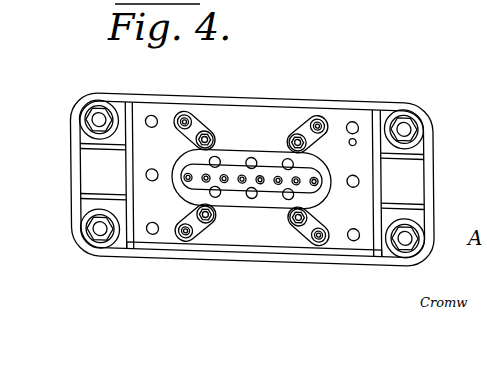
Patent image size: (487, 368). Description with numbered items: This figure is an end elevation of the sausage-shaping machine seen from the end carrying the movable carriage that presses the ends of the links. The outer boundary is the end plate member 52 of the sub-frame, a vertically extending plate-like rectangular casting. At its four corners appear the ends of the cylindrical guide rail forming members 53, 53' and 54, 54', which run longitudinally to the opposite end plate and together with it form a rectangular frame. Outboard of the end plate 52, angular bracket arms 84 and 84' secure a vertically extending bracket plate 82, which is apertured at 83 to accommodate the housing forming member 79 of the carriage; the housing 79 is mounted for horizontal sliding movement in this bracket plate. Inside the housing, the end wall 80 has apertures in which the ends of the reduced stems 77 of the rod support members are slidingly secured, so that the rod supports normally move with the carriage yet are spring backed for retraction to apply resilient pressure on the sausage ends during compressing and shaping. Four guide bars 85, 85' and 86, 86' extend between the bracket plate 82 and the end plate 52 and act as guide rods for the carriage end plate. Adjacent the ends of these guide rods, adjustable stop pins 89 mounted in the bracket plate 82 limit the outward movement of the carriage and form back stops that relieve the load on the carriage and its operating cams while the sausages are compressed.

The end plate member 52 is at (373, 96).
The guide rail forming member 53 is at (75, 111).
The guide rail forming member 53' is at (70, 235).
The guide rail forming member 54 is at (425, 125).
The guide rail forming member 54' is at (399, 258).
The angular bracket arm 84 is at (92, 174).
The angular bracket arm 84' is at (412, 184).
The bracket plate 82 is at (219, 113).
The aperture 83 is at (245, 151).
The housing forming member 79 is at (270, 159).
The end wall 80 is at (326, 190).
The stem 77 is at (204, 182).
The guide bar 85 is at (194, 111).
The guide bar 86 is at (309, 113).
The guide bar 85' is at (187, 248).
The guide bar 86' is at (309, 252).
The adjustable stop pin 89 is at (212, 138).